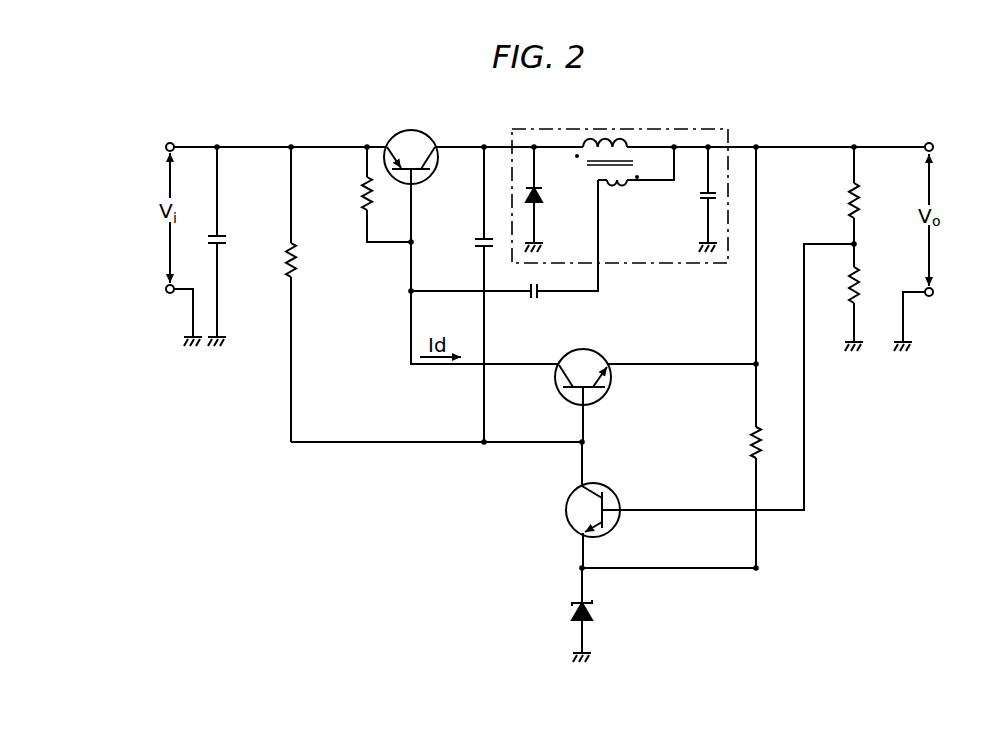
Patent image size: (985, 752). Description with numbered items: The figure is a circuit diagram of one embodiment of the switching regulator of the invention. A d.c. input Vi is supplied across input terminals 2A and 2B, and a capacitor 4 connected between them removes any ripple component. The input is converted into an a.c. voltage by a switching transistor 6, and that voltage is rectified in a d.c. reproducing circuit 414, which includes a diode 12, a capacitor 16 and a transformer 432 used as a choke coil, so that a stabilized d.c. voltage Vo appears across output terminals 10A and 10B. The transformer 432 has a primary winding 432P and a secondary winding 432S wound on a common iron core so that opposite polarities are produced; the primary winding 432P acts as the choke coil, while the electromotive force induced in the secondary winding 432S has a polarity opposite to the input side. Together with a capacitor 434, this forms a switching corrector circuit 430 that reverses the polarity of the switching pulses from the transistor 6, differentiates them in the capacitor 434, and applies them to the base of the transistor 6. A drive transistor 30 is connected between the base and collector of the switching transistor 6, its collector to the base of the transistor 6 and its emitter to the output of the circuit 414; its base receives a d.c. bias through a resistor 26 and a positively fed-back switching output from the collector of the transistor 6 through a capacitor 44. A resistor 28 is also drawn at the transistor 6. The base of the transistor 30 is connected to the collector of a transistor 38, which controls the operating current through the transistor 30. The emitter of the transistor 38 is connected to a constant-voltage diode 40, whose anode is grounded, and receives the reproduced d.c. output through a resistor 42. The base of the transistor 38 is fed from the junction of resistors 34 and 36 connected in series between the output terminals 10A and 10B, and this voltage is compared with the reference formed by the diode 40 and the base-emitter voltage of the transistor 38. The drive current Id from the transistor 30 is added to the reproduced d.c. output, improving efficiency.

The input terminal 2A is at (166, 146).
The input terminal 2B is at (166, 290).
The capacitor 4 is at (208, 242).
The switching transistor 6 is at (398, 134).
The output terminal 10A is at (933, 146).
The output terminal 10B is at (933, 292).
The diode 12 is at (542, 190).
The capacitor 16 is at (704, 198).
The resistor 26 is at (298, 272).
The resistor 28 is at (373, 208).
The drive transistor 30 is at (558, 392).
The resistor 34 is at (850, 207).
The resistor 36 is at (859, 286).
The transistor 38 is at (568, 502).
The constant-voltage diode 40 is at (572, 607).
The resistor 42 is at (753, 442).
The capacitor 44 is at (474, 241).
The d.c. reproducing circuit 414 is at (615, 265).
The switching corrector circuit 430 is at (561, 294).
The transformer 432 is at (626, 171).
The primary winding 432P is at (617, 142).
The secondary winding 432S is at (607, 190).
The capacitor 434 is at (526, 297).